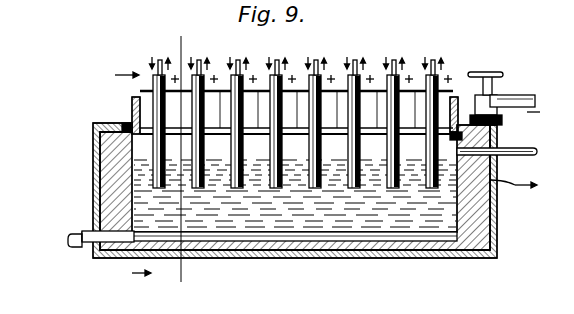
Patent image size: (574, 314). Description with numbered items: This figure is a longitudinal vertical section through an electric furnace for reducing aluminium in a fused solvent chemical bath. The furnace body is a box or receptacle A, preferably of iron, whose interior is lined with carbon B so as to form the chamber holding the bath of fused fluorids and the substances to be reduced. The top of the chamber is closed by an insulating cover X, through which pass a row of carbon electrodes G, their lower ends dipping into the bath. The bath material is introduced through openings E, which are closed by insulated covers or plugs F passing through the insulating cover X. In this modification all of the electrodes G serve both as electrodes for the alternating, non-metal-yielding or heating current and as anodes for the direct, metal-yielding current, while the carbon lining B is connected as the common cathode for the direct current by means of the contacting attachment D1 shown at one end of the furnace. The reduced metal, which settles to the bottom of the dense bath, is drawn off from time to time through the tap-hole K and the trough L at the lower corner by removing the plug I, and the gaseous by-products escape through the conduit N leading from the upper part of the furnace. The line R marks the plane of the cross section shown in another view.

The box or receptacle A is at (497, 213).
The carbon lining B is at (480, 238).
The openings E is at (244, 139).
The insulated covers or plugs F is at (412, 97).
The electrodes G is at (270, 76).
The insulating cover X is at (132, 101).
The section line R— R is at (179, 160).
The contacting attachment D1 is at (507, 98).
The conduit N is at (520, 145).
The plug I is at (91, 232).
The trough L is at (68, 241).
The tap-hole K is at (121, 255).